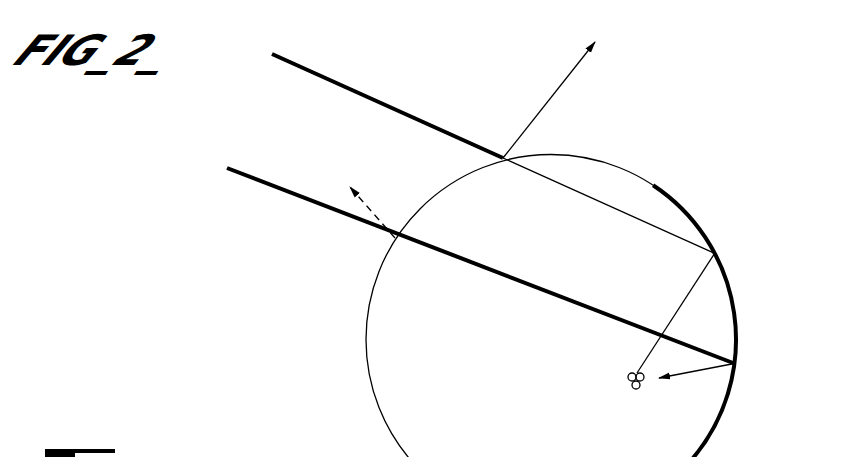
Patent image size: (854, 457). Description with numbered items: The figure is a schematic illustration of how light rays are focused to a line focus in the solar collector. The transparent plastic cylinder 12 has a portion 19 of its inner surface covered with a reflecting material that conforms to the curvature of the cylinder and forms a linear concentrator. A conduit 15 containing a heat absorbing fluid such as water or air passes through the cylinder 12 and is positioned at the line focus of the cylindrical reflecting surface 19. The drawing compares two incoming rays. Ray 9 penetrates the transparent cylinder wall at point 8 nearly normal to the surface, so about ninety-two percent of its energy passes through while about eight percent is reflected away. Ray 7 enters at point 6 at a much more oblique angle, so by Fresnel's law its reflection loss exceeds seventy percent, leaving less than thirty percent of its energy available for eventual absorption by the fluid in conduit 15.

The point 6 is at (500, 158).
The ray 7 is at (312, 78).
The point 8 is at (392, 239).
The ray 9 is at (268, 188).
The plastic cylinder 12 is at (366, 376).
The conduit 15 is at (637, 394).
The reflecting surface portion 19 is at (688, 437).